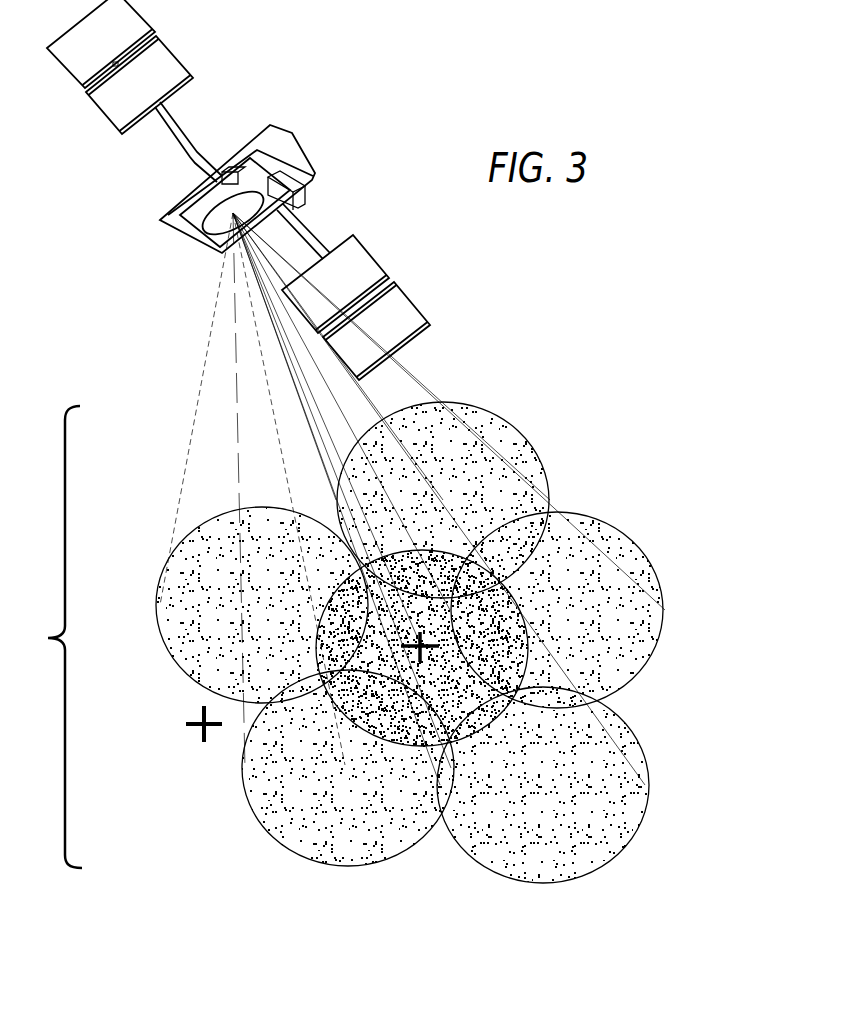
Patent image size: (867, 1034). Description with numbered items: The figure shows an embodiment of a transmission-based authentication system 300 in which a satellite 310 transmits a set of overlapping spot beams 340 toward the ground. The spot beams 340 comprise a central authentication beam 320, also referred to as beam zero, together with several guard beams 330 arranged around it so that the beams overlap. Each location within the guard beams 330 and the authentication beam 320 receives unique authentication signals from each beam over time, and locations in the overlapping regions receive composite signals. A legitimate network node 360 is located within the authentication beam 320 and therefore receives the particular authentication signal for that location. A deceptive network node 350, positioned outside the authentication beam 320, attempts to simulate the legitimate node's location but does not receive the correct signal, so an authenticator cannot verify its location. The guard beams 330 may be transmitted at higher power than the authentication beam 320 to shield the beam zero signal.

The transmission-based authentication system 300 is at (328, 932).
The satellite 310 is at (148, 210).
The authentication beam 320 is at (452, 695).
The guard beams 330 is at (485, 482).
The overlapping spot beams 340 is at (47, 637).
The deceptive network node 350 is at (190, 727).
The legitimate network node 360 is at (430, 640).